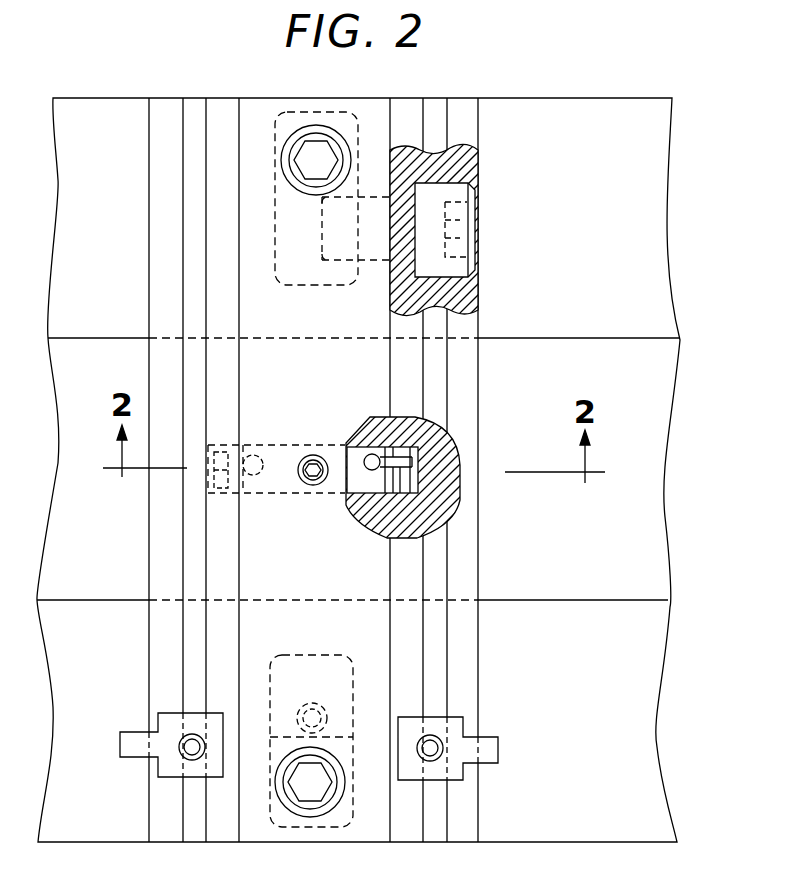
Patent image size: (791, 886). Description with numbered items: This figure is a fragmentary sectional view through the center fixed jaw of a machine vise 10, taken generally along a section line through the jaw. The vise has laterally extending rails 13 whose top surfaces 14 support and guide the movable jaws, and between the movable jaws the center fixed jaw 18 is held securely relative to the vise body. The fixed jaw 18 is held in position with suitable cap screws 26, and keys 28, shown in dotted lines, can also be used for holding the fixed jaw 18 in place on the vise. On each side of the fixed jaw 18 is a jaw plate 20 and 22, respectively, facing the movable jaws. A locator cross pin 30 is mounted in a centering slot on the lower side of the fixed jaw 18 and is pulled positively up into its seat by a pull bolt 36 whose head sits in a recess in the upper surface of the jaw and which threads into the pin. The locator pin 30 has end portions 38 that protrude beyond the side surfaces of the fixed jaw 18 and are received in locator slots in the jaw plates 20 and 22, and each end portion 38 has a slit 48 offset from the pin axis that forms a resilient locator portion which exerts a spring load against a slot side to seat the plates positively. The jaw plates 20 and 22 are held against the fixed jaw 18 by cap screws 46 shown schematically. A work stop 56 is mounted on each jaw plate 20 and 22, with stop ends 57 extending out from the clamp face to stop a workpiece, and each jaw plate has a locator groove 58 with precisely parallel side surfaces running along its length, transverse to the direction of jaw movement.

The machine vise 10 is at (595, 97).
The rails 13 is at (632, 342).
The top surfaces 14 is at (637, 260).
The fixed jaw 18 is at (363, 110).
The jaw plate 20 is at (463, 528).
The jaw plate 22 is at (162, 372).
The cap screws 26 is at (305, 163).
The keys 28 is at (275, 182).
The locator cross pin 30 is at (352, 447).
The pull bolt 36 is at (305, 462).
The end portions 38 is at (218, 493).
The cap screws 46 is at (458, 197).
The slit 48 is at (428, 450).
The work stop 56 is at (192, 725).
The stop ends 57 is at (128, 758).
The locator groove 58 is at (193, 527).